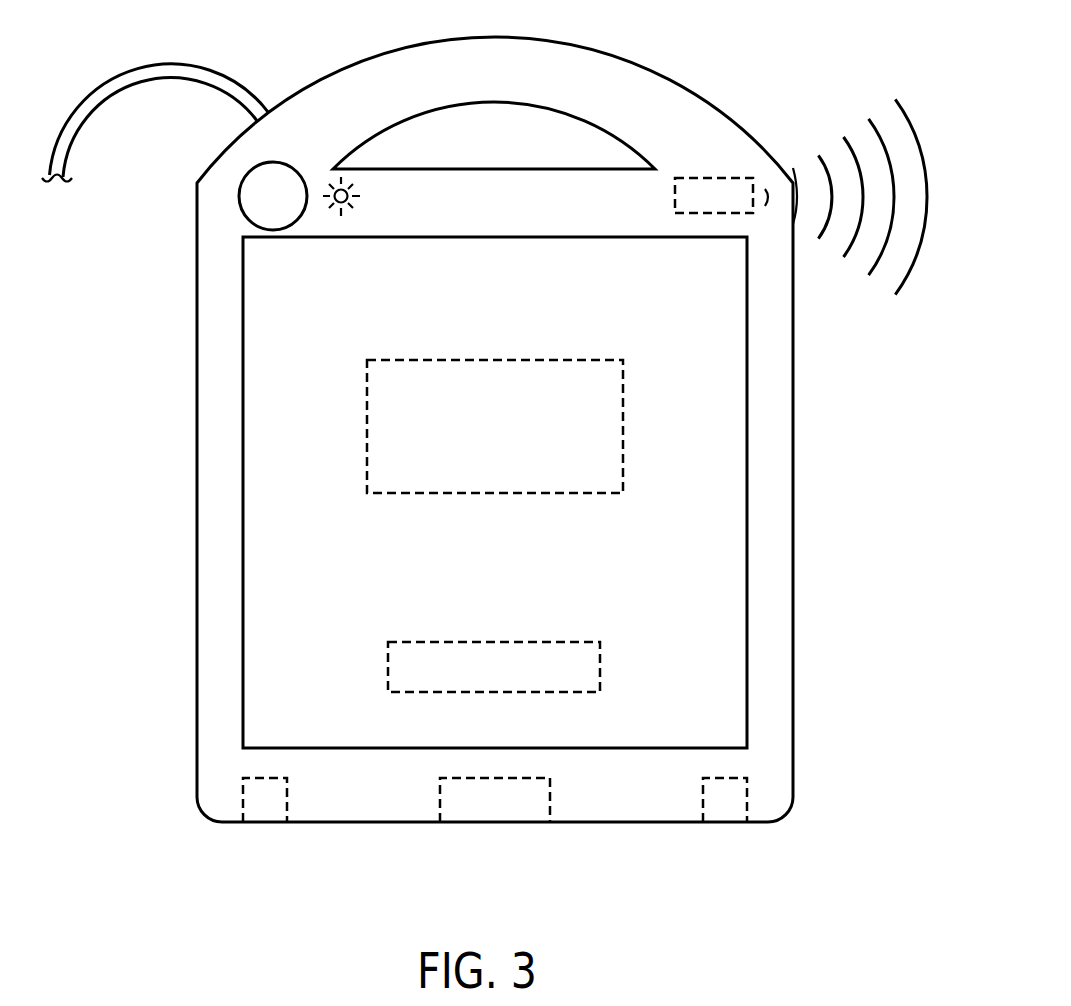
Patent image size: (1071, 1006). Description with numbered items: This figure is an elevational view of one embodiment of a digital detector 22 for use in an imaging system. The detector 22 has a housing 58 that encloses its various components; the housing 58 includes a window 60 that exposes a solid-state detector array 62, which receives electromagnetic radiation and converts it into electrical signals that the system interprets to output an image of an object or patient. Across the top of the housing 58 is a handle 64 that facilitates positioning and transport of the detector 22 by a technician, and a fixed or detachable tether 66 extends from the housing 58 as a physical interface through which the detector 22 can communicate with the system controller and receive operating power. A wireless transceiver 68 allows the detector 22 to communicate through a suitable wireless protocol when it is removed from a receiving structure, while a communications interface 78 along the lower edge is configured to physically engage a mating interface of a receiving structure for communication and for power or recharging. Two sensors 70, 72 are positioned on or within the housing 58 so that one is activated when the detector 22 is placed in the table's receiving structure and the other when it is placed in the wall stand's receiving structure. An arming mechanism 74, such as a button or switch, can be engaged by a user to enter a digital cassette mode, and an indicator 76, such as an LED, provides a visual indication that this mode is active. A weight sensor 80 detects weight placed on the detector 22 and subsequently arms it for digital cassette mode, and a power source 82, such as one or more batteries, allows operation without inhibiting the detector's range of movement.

The digital detector 22 is at (180, 856).
The housing 58 is at (780, 473).
The window 60 is at (747, 493).
The solid-state detector array 62 is at (755, 653).
The handle 64 is at (624, 74).
The tether 66 is at (148, 72).
The wireless transceiver 68 is at (710, 178).
The sensor 70 is at (290, 800).
The sensor 72 is at (749, 800).
The arming mechanism 74 is at (300, 164).
The indicator 76 is at (351, 200).
The communications interface 78 is at (554, 800).
The weight sensor 80 is at (493, 494).
The power source 82 is at (604, 671).